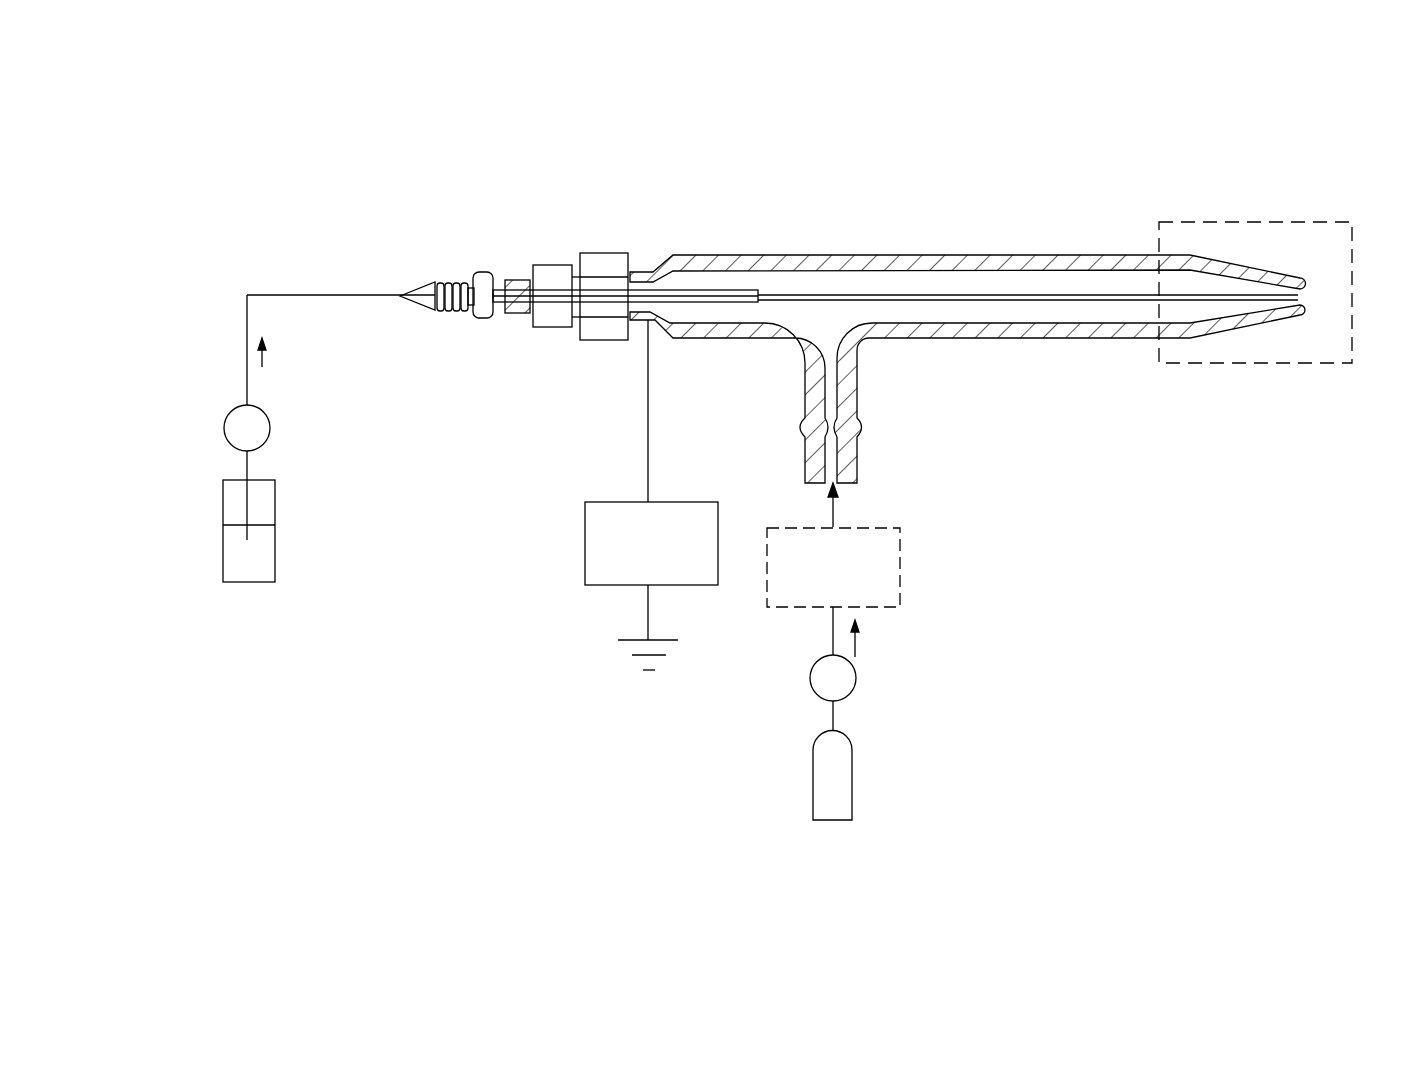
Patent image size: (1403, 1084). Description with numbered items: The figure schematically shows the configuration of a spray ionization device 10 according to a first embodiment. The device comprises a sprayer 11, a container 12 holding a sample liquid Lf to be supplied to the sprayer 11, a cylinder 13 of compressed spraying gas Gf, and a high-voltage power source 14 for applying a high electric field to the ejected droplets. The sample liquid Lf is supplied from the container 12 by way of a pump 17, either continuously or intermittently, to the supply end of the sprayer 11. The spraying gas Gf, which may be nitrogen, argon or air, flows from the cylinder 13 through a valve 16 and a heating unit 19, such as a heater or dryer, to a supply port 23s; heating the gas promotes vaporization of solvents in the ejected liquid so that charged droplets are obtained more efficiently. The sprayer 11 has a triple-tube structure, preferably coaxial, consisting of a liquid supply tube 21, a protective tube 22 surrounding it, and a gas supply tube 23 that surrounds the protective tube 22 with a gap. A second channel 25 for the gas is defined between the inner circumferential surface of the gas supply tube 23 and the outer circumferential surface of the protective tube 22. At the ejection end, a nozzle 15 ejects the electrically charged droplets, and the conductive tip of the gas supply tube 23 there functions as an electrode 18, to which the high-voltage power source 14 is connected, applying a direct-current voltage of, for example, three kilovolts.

The spray ionization device 10 is at (253, 124).
The sprayer 11 is at (670, 198).
The container 12 is at (233, 557).
The cylinder 13 is at (822, 763).
The high-voltage power source 14 is at (585, 543).
The nozzle 15 is at (1256, 365).
The valve 16 is at (855, 682).
The pump 17 is at (228, 414).
The electrode 18 is at (1290, 258).
The heating unit 19 is at (900, 574).
The liquid supply tube 21 is at (1046, 300).
The protective tube 22 is at (1028, 352).
The gas supply tube 23 is at (1050, 253).
The supply port 23s is at (850, 500).
The second channel 25 is at (1117, 313).